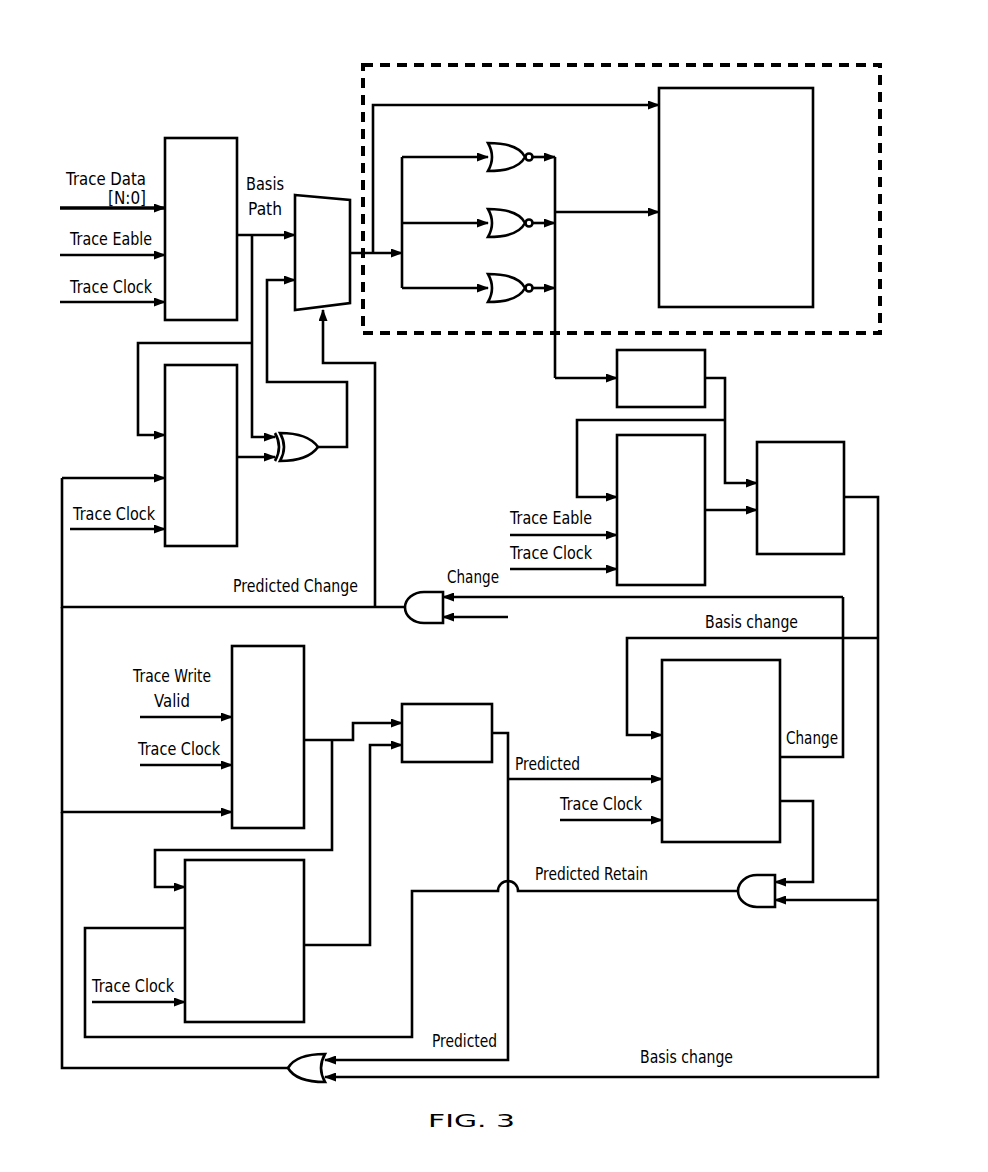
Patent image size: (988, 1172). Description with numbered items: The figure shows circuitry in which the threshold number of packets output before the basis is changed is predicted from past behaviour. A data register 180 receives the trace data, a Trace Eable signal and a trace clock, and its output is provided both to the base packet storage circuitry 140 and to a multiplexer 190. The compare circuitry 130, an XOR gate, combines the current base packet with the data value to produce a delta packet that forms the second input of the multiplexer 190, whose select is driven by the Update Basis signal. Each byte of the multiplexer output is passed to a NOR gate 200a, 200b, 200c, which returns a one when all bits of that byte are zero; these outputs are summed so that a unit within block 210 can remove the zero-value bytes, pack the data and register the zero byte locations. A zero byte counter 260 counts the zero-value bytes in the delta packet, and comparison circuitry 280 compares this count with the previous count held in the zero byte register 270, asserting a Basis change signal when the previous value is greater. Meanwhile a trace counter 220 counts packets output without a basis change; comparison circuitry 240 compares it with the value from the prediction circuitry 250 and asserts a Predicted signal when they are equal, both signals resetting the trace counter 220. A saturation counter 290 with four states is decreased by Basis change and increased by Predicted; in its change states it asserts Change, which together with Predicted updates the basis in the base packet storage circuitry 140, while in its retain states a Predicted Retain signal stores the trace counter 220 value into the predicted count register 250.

The compare circuitry 130 is at (292, 463).
The base packet storage circuitry 140 is at (165, 465).
The data register 180 is at (202, 137).
The multiplexer 190 is at (320, 195).
The NOR gate 200a is at (523, 150).
The NOR gate 200b is at (523, 215).
The NOR gate 200c is at (523, 280).
The zero byte detection and removal block 210 is at (758, 65).
The trace counter 220 is at (304, 672).
The comparison circuitry 240 is at (447, 765).
The prediction circuitry 250 is at (304, 978).
The zero byte counter 260 is at (707, 365).
The zero byte register 270 is at (617, 475).
The comparison circuitry 280 is at (800, 442).
The saturation counter 290 is at (662, 760).